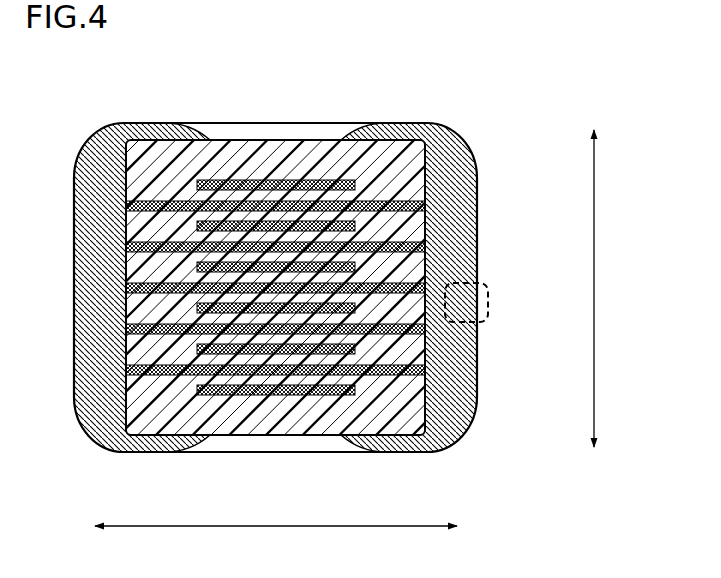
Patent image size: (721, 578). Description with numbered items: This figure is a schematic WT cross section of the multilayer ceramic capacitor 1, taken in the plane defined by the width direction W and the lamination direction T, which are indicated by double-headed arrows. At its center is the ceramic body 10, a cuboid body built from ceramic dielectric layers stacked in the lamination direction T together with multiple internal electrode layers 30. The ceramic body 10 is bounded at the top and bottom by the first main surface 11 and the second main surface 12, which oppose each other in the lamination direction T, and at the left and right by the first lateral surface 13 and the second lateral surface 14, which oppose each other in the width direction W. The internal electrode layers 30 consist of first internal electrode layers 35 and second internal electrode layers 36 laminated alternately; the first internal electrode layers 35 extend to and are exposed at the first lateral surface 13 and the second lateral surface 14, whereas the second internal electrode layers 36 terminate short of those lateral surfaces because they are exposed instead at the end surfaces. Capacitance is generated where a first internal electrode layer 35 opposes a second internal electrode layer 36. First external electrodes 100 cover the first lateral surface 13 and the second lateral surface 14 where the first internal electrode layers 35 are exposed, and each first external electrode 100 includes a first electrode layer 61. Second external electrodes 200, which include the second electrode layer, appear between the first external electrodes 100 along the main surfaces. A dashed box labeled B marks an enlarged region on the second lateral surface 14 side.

The multilayer ceramic capacitor 1 is at (537, 105).
The ceramic body 10 is at (213, 128).
The first main surface 11 is at (268, 140).
The second main surface 12 is at (212, 437).
The first lateral surface 13 is at (125, 345).
The second lateral surface 14 is at (425, 345).
The internal electrode layers 30 is at (292, 342).
The first internal electrode layers 35 is at (332, 326).
The second internal electrode layers 36 is at (295, 395).
The first electrode layer 61 is at (93, 235).
The first external electrodes 100 is at (103, 128).
The second external electrodes 200 is at (305, 130).
The region B is at (480, 302).
The lamination direction T is at (610, 288).
The width direction W is at (276, 545).